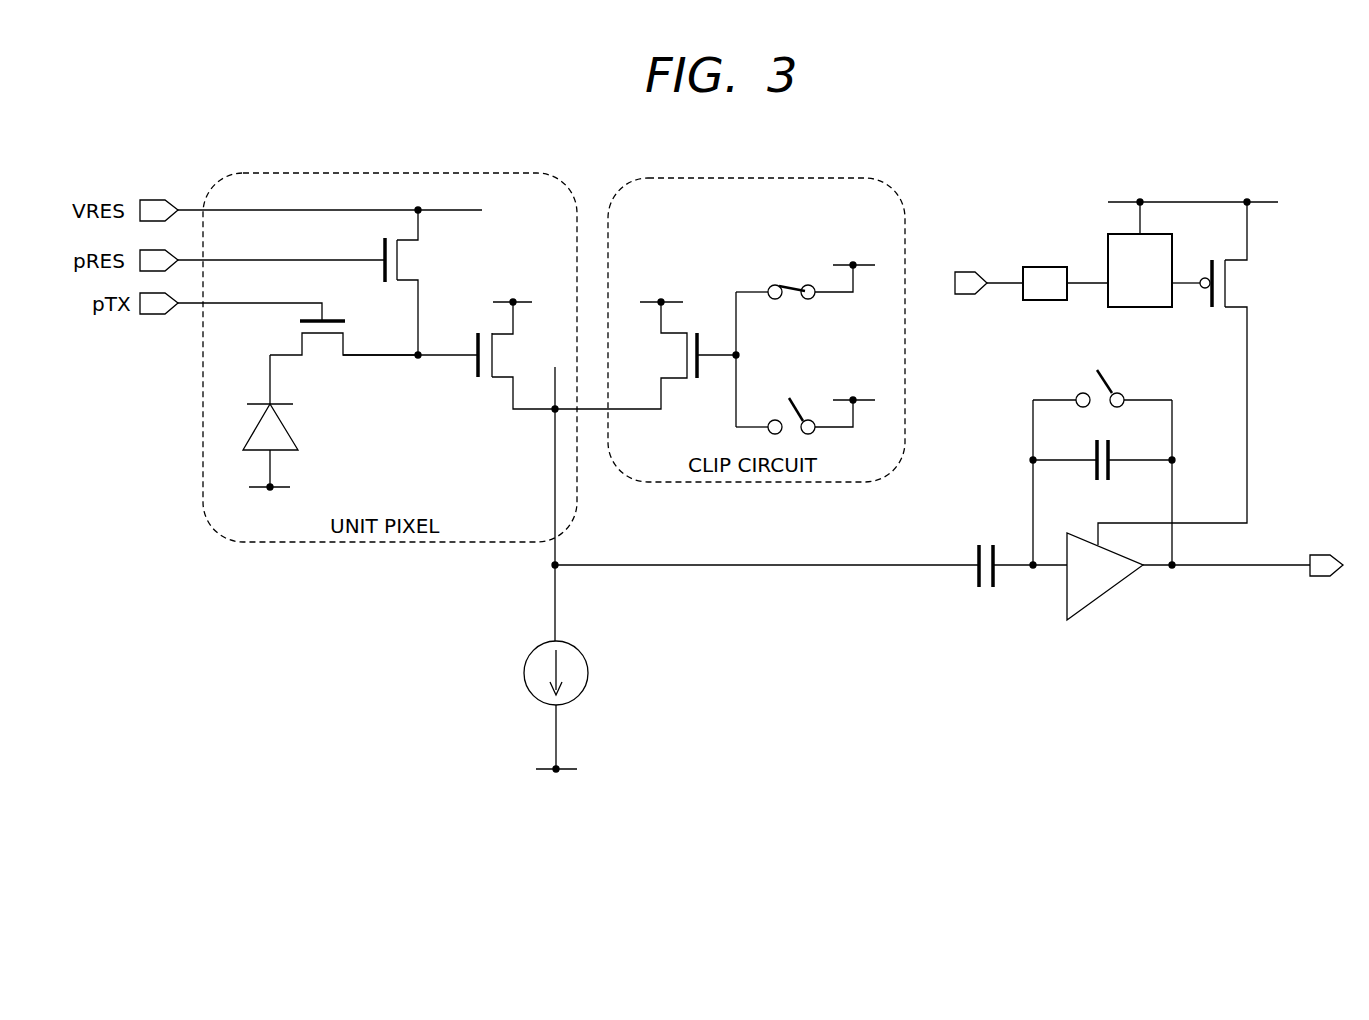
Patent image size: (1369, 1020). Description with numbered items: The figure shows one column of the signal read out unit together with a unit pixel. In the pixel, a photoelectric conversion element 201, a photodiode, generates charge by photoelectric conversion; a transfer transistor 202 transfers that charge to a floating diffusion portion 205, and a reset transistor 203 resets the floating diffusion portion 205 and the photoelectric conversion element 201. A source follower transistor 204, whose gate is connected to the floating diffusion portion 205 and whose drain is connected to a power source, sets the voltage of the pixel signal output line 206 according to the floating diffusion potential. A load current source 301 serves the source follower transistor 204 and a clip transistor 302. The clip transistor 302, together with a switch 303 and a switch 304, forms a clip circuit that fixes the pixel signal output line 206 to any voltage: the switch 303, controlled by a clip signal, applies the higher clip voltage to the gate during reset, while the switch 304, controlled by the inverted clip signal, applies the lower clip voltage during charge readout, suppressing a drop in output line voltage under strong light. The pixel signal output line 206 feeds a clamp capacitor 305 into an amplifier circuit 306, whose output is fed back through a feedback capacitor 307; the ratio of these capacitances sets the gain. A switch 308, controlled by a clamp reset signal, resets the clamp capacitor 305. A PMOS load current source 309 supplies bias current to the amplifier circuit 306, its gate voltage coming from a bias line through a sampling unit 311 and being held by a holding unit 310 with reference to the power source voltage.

The photoelectric conversion element 201 is at (327, 437).
The transfer transistor 202 is at (344, 360).
The reset transistor 203 is at (345, 281).
The source follower transistor 204 is at (529, 351).
The floating diffusion portion 205 is at (410, 386).
The pixel signal output line 206 is at (556, 545).
The load current source 301 is at (590, 670).
The clip transistor 302 is at (695, 332).
The switch 303 is at (794, 300).
The switch 304 is at (795, 432).
The clamp capacitor 305 is at (986, 589).
The amplifier circuit 306 is at (1105, 600).
The feedback capacitor 307 is at (1098, 484).
The switch 308 is at (1099, 405).
The load current source 309 is at (1240, 287).
The holding unit 310 is at (1135, 309).
The sampling unit 311 is at (1040, 302).